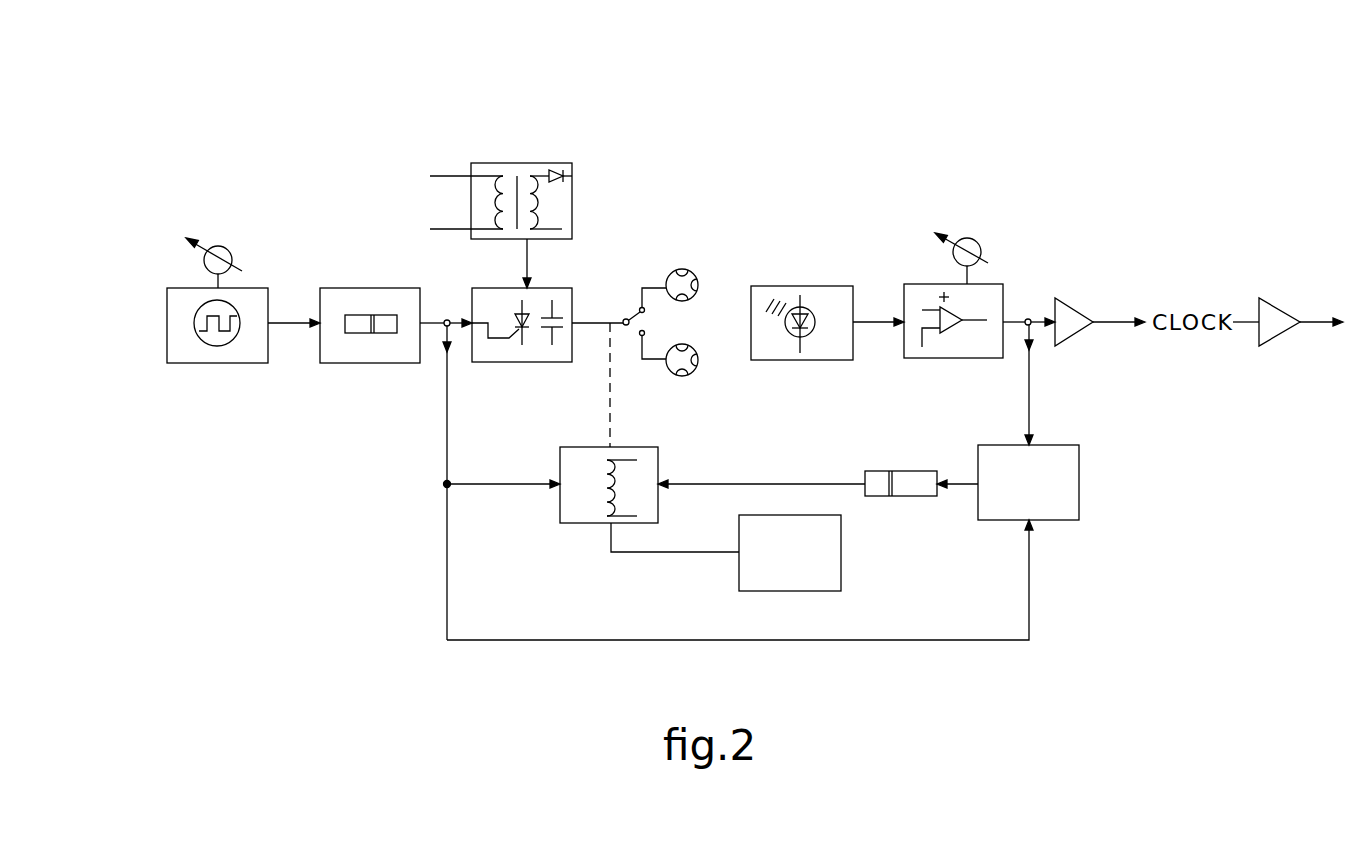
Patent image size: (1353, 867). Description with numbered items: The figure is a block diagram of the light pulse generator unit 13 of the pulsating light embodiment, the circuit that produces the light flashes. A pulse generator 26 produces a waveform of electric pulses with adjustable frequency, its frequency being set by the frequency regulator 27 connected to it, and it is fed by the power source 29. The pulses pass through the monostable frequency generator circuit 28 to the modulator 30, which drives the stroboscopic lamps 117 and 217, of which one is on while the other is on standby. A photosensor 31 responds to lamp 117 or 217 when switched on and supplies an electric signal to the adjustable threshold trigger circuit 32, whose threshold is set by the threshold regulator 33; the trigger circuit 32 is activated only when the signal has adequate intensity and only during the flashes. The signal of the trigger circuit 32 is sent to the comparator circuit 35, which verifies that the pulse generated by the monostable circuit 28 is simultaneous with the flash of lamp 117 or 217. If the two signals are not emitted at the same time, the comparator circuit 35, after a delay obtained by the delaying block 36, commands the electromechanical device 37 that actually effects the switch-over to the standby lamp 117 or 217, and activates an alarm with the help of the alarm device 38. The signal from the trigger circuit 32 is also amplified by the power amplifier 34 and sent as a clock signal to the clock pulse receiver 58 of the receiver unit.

The light pulse generator unit 13 is at (810, 161).
The pulse generator 26 is at (223, 353).
The frequency regulator 27 is at (230, 256).
The monostable frequency generator circuit 28 is at (356, 350).
The power source 29 is at (531, 170).
The modulator 30 is at (527, 353).
The stroboscopic lamp 117 is at (690, 278).
The stroboscopic lamp 217 is at (685, 366).
The photosensor 31 is at (818, 293).
The adjustable threshold trigger circuit 32 is at (918, 350).
The threshold regulator 33 is at (973, 247).
The power amplifier 34 is at (1113, 316).
The comparator circuit 35 is at (1073, 490).
The delaying block 36 is at (915, 490).
The electromechanical device 37 is at (588, 516).
The alarm device 38 is at (835, 565).
The clock pulse receiver 58 is at (1273, 325).